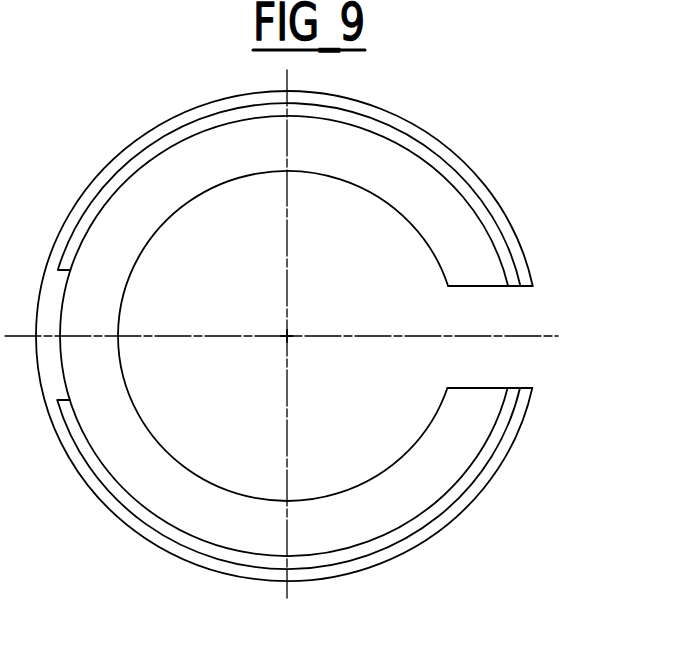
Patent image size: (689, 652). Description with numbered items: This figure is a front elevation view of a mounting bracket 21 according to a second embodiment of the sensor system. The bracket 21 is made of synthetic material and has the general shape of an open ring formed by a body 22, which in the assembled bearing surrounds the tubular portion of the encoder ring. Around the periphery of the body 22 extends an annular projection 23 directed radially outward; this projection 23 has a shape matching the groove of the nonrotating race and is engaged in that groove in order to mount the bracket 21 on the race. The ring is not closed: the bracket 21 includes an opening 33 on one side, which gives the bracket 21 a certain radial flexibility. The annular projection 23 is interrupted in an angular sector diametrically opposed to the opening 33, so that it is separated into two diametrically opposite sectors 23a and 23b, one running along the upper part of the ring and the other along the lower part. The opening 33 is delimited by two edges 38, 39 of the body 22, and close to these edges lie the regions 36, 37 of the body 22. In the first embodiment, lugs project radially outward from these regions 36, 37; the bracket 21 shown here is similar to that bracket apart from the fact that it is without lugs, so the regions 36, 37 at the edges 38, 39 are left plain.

The mounting bracket 21 is at (473, 510).
The body 22 is at (178, 187).
The annular projection 23 is at (290, 328).
The sector 23a is at (403, 138).
The sector 23b is at (412, 530).
The opening 33 is at (515, 305).
The region 36 is at (473, 268).
The region 37 is at (470, 403).
The edge 38 is at (470, 287).
The edge 39 is at (468, 387).